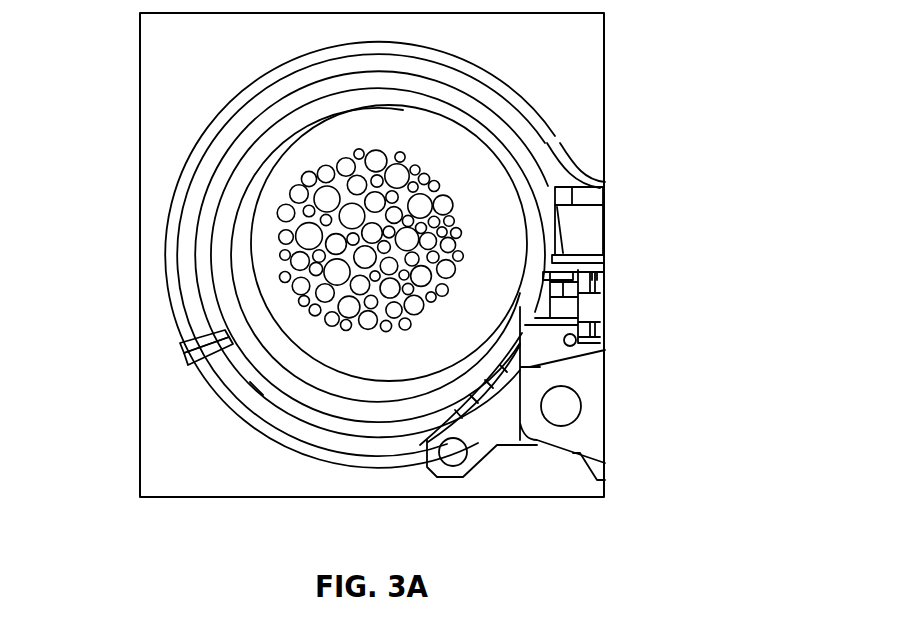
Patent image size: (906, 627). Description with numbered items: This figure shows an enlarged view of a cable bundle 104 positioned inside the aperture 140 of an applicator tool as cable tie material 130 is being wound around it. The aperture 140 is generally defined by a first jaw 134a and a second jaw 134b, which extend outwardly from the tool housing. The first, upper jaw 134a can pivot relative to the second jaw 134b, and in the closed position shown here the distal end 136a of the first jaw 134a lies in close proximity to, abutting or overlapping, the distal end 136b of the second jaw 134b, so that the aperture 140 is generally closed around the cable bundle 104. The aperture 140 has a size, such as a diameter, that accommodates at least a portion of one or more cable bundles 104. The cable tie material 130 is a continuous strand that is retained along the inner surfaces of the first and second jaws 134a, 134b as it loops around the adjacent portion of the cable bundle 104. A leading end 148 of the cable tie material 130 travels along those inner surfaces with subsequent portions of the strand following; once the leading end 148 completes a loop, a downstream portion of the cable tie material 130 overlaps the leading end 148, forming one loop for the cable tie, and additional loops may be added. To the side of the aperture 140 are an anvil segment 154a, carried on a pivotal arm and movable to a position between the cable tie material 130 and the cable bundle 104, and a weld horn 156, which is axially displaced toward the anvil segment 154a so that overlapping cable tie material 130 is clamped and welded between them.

The cable bundle 104 is at (423, 217).
The cable tie material 130 is at (284, 341).
The first jaw 134a is at (498, 103).
The second jaw 134b is at (296, 446).
The distal end of the first jaw 136a is at (205, 343).
The distal end of the second jaw 136b is at (187, 355).
The aperture 140 is at (300, 395).
The leading end of the cable tie material 148 is at (530, 238).
The anvil segment 154a is at (585, 230).
The weld horn 156 is at (590, 196).